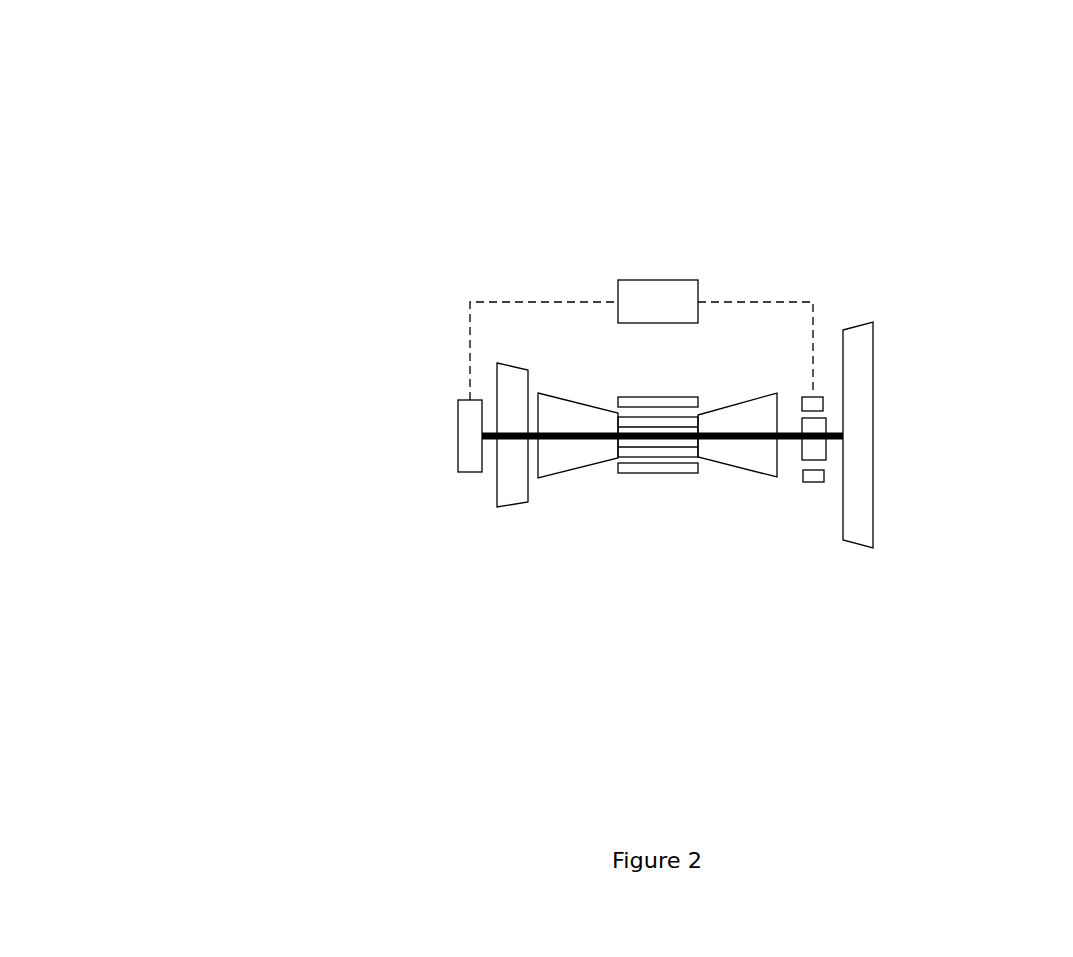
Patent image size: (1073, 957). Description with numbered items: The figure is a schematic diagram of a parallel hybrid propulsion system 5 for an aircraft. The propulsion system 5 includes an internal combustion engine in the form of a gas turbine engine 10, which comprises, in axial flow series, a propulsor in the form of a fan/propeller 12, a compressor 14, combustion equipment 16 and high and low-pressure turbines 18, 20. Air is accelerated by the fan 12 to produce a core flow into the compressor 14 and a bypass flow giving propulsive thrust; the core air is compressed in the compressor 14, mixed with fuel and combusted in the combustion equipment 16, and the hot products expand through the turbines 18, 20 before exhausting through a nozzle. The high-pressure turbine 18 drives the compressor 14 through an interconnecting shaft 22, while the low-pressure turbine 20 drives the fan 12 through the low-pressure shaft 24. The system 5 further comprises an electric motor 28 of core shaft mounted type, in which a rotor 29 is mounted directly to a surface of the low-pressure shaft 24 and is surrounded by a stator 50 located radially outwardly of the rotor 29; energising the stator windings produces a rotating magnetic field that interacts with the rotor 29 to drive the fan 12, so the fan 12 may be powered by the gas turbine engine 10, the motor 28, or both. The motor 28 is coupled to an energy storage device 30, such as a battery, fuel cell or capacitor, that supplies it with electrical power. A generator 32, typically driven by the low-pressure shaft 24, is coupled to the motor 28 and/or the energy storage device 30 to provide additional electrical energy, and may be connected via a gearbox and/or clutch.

The propulsion system 5 is at (322, 370).
The gas turbine engine 10 is at (583, 355).
The fan/propeller 12 is at (873, 353).
The compressor 14 is at (738, 462).
The combustion equipment 16 is at (678, 473).
The high-pressure turbine 18 is at (550, 477).
The low-pressure turbine 20 is at (513, 505).
The interconnecting shaft 22 is at (622, 473).
The low-pressure shaft 24 is at (740, 436).
The electric motor 28 is at (814, 512).
The rotor 29 is at (817, 418).
The energy storage device 30 is at (700, 302).
The generator 32 is at (470, 472).
The stator 50 is at (827, 476).